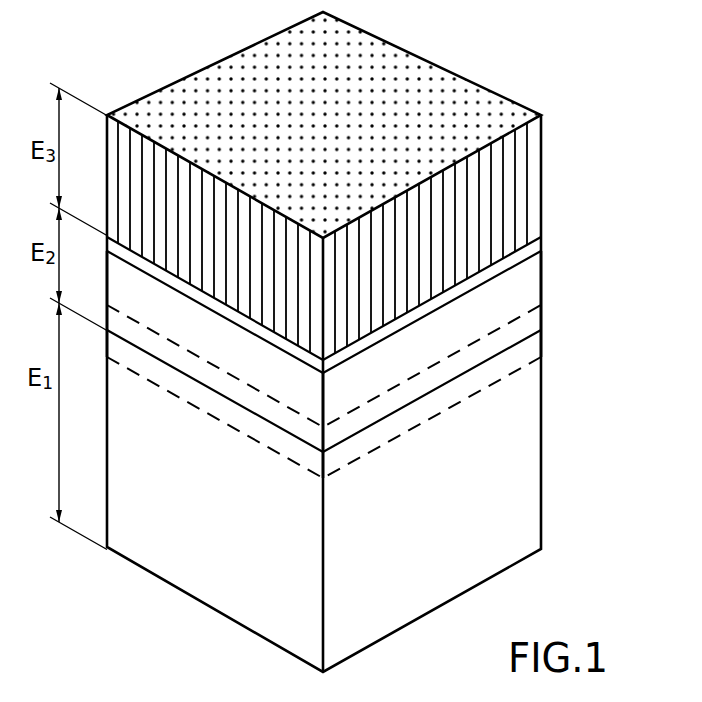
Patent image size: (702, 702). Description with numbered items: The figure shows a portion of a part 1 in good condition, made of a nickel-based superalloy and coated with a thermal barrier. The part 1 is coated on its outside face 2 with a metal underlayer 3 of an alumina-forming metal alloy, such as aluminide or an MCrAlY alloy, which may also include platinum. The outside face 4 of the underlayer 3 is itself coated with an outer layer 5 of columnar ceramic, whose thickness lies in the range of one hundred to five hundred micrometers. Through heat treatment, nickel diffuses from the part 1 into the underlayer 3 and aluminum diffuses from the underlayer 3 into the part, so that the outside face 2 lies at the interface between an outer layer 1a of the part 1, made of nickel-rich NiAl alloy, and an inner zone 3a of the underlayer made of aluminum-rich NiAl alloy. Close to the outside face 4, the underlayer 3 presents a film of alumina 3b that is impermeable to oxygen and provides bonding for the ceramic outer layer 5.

The part 1 is at (516, 481).
The outer layer of the part 1a is at (541, 339).
The outside face 2 is at (452, 380).
The metal underlayer 3 is at (360, 324).
The inner zone of the underlayer 3a is at (531, 322).
The film of alumina 3b is at (533, 252).
The outside face of the underlayer 4 is at (497, 257).
The outer layer 5 is at (405, 96).